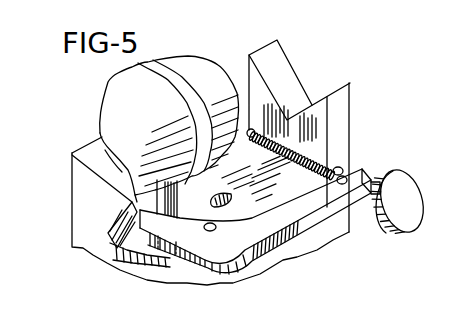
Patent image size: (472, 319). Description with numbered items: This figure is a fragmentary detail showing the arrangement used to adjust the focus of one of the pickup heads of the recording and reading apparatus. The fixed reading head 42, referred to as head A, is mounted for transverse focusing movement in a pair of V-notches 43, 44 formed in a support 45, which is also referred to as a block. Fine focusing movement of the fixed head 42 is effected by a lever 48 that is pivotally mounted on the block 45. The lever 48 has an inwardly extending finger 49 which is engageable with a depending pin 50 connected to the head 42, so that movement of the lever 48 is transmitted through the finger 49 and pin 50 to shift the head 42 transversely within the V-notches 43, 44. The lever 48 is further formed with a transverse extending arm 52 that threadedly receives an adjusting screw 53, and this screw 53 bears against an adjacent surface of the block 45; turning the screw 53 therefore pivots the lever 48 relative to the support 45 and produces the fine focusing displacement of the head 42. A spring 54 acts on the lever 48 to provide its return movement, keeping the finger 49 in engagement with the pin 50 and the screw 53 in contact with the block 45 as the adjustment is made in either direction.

The fixed reading head 42 is at (187, 62).
The V-notch 43 is at (298, 101).
The V-notch 44 is at (110, 203).
The support 45 is at (88, 248).
The lever 48 is at (270, 238).
The inwardly extending finger 49 is at (134, 164).
The depending pin 50 is at (180, 197).
The transverse extending arm 52 is at (363, 166).
The adjusting screw 53 is at (414, 189).
The spring 54 is at (304, 157).